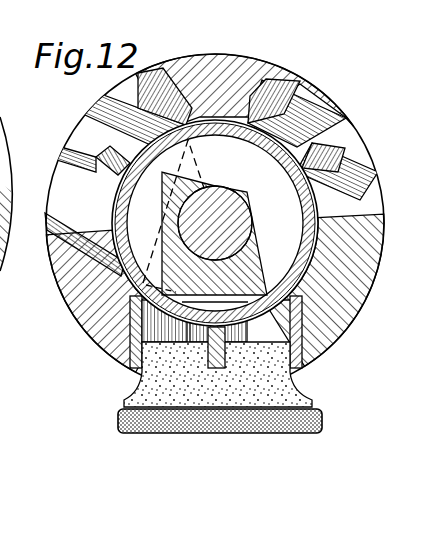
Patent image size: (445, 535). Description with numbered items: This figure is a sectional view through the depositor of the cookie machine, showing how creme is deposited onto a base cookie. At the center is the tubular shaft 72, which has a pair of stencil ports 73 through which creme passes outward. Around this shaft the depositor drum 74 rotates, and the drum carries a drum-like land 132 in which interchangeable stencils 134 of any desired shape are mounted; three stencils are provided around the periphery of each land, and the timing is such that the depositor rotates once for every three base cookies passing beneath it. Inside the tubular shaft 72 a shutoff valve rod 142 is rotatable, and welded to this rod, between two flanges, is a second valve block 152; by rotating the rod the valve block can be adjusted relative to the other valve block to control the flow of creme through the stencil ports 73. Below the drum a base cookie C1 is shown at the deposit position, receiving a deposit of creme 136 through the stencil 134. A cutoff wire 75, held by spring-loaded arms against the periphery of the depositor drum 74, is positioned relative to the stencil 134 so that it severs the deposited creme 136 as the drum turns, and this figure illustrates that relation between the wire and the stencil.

The drum-like land 132 is at (250, 59).
The stencil 134 is at (83, 133).
The depositor drum 74 is at (68, 304).
The cutoff wire 75 is at (296, 371).
The stencil port 73 is at (236, 317).
The tubular shaft 72 is at (260, 143).
The second valve block 152 is at (261, 252).
The shutoff valve rod 142 is at (228, 189).
The creme 136 is at (148, 394).
The base cookie C1 is at (204, 433).